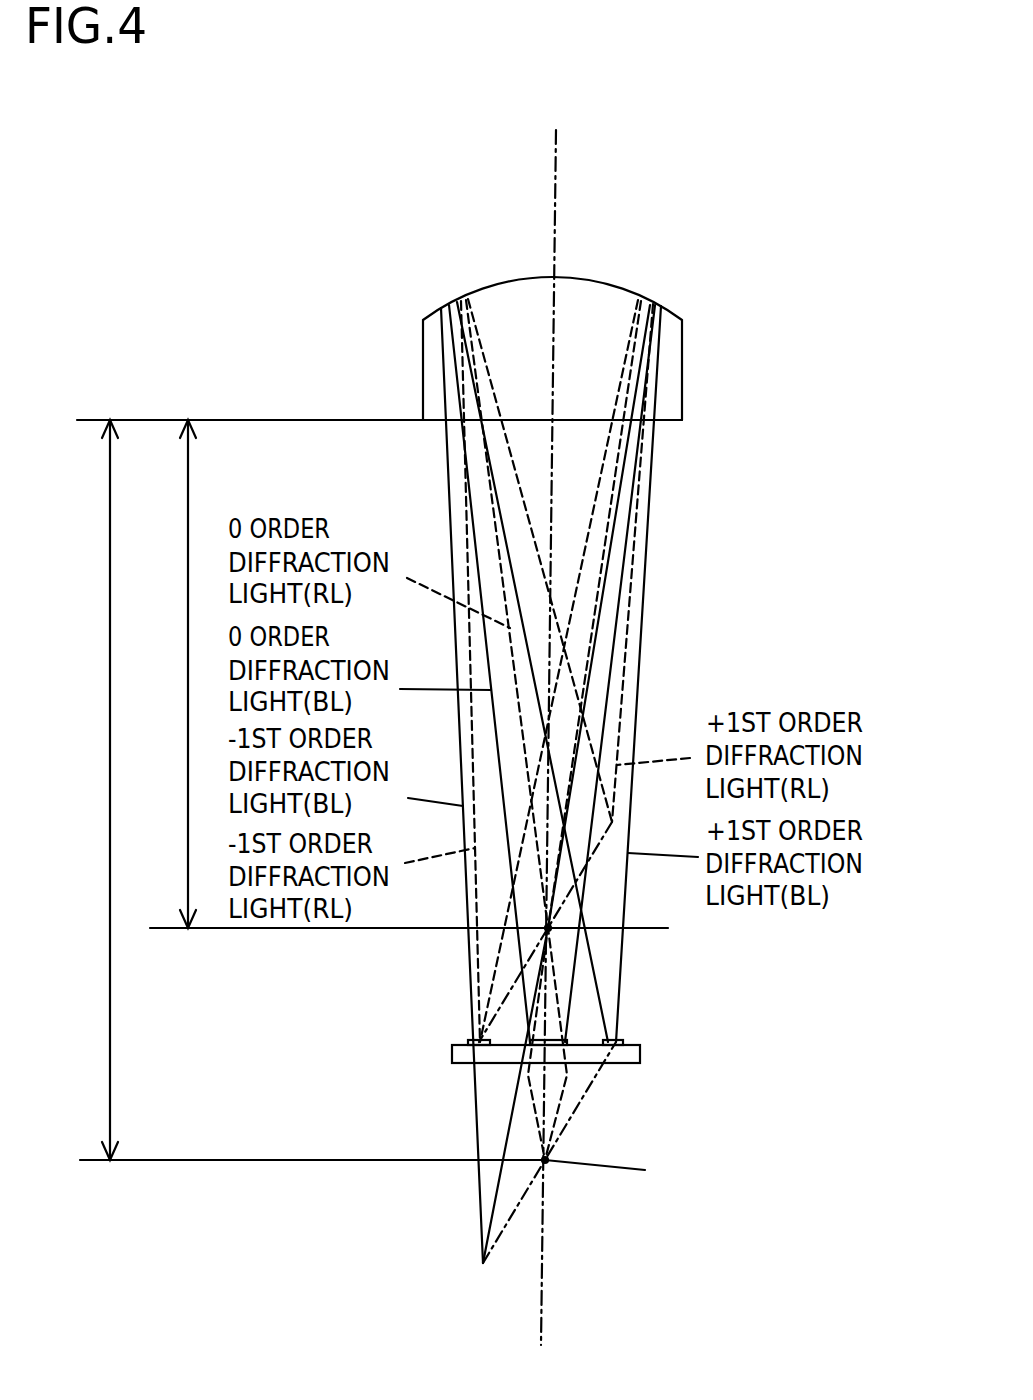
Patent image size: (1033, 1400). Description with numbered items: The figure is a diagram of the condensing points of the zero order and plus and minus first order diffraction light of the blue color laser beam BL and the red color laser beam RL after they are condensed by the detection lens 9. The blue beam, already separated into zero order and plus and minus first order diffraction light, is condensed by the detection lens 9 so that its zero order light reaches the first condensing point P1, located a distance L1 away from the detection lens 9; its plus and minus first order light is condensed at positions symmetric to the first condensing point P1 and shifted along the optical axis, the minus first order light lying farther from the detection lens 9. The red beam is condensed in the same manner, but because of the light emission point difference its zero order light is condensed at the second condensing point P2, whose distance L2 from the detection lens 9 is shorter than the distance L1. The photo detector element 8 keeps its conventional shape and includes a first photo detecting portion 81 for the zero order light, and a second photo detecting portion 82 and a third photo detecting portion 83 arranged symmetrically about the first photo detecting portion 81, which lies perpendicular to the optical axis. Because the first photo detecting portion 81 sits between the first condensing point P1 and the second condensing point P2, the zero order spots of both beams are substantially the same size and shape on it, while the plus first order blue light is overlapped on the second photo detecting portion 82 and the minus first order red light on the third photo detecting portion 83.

The detection lens 9 is at (434, 351).
The photo detector element 8 is at (452, 1063).
The first photo detecting portion 81 is at (567, 1045).
The second photo detecting portion 82 is at (622, 1040).
The third photo detecting portion 83 is at (470, 1039).
The first condensing point P1 is at (384, 1171).
The second condensing point P2 is at (430, 930).
The distance L1 is at (93, 790).
The distance L2 is at (169, 674).